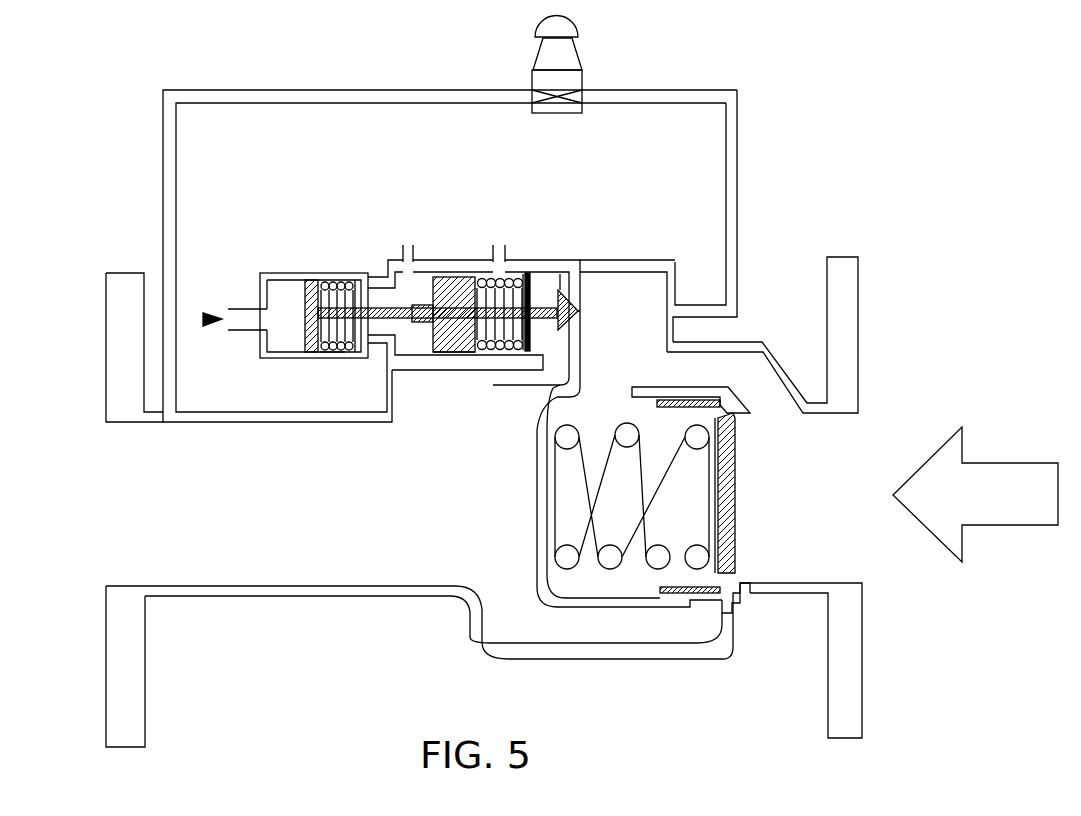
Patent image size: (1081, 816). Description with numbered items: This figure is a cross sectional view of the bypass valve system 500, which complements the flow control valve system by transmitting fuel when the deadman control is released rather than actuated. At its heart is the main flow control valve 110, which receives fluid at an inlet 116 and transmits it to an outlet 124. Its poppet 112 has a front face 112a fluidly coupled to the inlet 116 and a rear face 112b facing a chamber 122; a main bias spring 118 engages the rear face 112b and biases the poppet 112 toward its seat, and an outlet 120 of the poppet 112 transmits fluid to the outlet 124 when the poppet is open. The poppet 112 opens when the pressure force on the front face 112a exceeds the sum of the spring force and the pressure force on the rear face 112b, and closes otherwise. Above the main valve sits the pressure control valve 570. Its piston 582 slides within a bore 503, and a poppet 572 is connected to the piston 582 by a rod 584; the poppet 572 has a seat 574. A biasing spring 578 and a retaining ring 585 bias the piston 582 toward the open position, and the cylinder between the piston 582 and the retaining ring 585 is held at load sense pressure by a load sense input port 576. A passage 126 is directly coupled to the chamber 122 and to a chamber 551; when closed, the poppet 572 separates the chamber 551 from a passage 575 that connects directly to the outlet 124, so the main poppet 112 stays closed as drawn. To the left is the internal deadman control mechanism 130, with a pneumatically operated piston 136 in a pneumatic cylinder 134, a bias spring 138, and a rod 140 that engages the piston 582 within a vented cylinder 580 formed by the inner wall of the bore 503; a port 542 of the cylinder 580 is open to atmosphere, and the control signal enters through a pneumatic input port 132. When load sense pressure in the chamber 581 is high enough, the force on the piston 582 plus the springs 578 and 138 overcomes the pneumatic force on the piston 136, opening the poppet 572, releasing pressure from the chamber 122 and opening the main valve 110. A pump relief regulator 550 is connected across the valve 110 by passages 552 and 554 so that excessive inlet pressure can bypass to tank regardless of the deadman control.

The bypass valve system 500 is at (870, 142).
The pump relief regulator 550 is at (590, 46).
The chamber 551 is at (628, 262).
The passage 552 is at (738, 133).
The passage 554 is at (345, 90).
The pressure control valve 570 is at (462, 258).
The poppet 572 is at (580, 305).
The seat 574 is at (560, 272).
The passage 575 is at (500, 390).
The load sense input port 576 is at (502, 248).
The biasing spring 578 is at (443, 355).
The vented cylinder 580 is at (417, 262).
The chamber 581 is at (502, 353).
The piston 582 is at (436, 276).
The rod 584 is at (550, 317).
The retaining ring 585 is at (538, 272).
The port 542 is at (416, 303).
The deadman control mechanism 130 is at (340, 262).
The pneumatic input port 132 is at (205, 318).
The pneumatic cylinder 134 is at (286, 285).
The pneumatically operated piston 136 is at (310, 352).
The bias spring 138 is at (342, 350).
The rod 140 is at (395, 300).
The bore 503 is at (335, 353).
The passage 126 is at (740, 352).
The outlet 124 is at (150, 514).
The chamber 122 is at (563, 412).
The main flow control valve 110 is at (752, 544).
The poppet 112 is at (736, 487).
The front face 112a is at (752, 593).
The rear face 112b is at (707, 597).
The inlet 116 is at (883, 428).
The main bias spring 118 is at (603, 570).
The outlet 120 is at (710, 632).